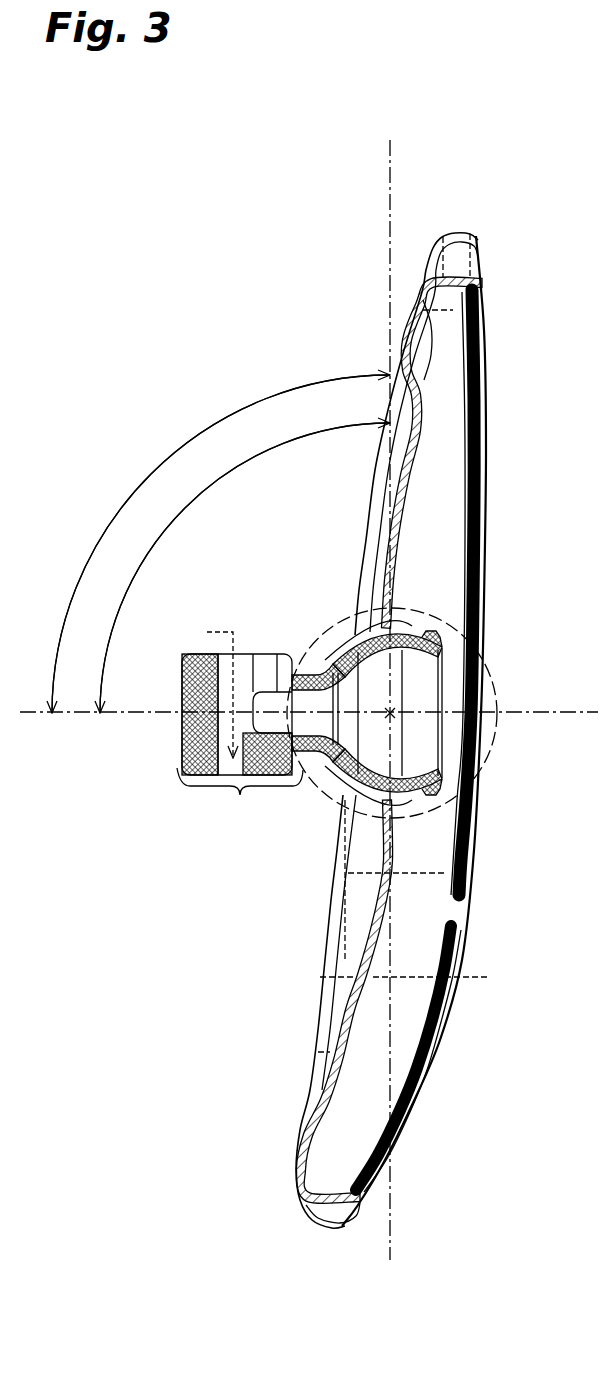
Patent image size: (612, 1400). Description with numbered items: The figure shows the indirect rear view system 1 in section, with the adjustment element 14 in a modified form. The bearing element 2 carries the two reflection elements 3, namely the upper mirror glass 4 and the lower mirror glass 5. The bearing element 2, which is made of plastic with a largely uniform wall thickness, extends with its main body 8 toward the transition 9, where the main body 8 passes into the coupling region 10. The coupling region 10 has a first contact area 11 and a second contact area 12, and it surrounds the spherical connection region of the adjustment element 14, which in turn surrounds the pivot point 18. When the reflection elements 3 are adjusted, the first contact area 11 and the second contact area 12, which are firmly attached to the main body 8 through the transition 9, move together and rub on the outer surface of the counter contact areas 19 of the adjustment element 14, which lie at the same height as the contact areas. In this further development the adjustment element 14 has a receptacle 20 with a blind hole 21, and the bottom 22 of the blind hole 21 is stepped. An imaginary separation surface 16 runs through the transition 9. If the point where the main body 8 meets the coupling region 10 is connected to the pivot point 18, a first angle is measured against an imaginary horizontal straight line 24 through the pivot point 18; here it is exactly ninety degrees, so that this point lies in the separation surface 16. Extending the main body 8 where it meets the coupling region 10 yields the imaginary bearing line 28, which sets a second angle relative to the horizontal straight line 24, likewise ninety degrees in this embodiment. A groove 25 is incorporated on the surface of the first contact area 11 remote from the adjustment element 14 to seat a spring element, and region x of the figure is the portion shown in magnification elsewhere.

The indirect rear view system 1 is at (513, 290).
The bearing element 2 is at (406, 355).
The reflection elements 3 is at (468, 741).
The upper mirror glass 4 is at (478, 462).
The lower mirror glass 5 is at (443, 985).
The main body 8 is at (365, 927).
The transition 9 is at (377, 625).
The coupling region 10 is at (345, 630).
The first contact area 11 is at (440, 640).
The second contact area 12 is at (322, 640).
The adjustment element 14 is at (172, 795).
The separation surface 16 is at (395, 188).
The pivot point 18 is at (343, 775).
The counter contact areas 19 is at (442, 652).
The receptacle 20 is at (240, 796).
The blind hole 21 is at (205, 689).
The bottom 22 is at (183, 740).
The imaginary horizontal straight line 24 is at (70, 714).
The groove 25 is at (432, 630).
The imaginary bearing line 28 is at (385, 697).
The region X x is at (520, 700).